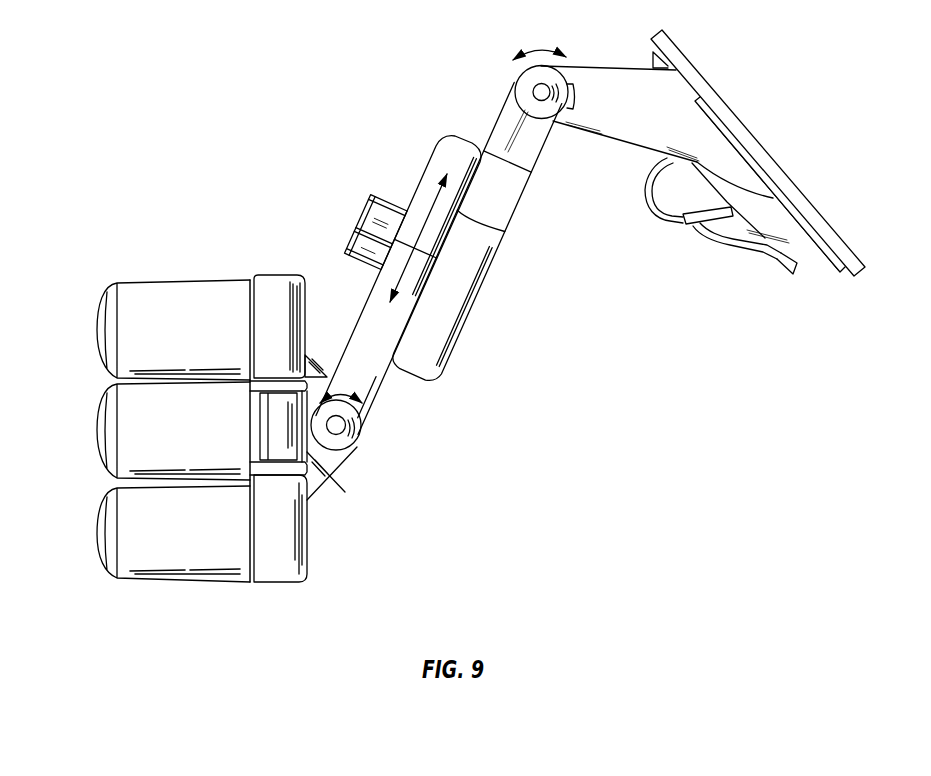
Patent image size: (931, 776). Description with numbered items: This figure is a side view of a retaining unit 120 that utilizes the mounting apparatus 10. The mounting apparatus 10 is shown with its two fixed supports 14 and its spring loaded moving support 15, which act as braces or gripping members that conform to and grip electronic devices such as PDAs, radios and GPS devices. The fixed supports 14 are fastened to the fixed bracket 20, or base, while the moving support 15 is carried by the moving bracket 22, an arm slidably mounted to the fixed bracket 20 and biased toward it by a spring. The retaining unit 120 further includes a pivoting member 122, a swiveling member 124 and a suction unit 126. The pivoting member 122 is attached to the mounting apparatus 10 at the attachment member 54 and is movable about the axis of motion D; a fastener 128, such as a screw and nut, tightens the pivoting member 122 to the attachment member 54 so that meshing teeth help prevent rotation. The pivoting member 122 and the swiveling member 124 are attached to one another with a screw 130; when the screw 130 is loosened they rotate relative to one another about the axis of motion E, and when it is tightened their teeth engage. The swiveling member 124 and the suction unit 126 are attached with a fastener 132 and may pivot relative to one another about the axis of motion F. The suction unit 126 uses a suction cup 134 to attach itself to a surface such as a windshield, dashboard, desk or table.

The mounting apparatus 10 is at (192, 262).
The fixed supports 14 is at (97, 330).
The spring loaded moving support 15 is at (97, 430).
The fixed bracket 20 is at (275, 276).
The moving bracket 22 is at (323, 465).
The attachment member 54 is at (355, 457).
The retaining unit 120 is at (592, 37).
The pivoting member 122 is at (377, 397).
The swiveling member 124 is at (473, 300).
The suction unit 126 is at (717, 242).
The fastener 128 is at (345, 432).
The screw 130 is at (357, 225).
The fastener 132 is at (532, 92).
The suction cup 134 is at (800, 250).